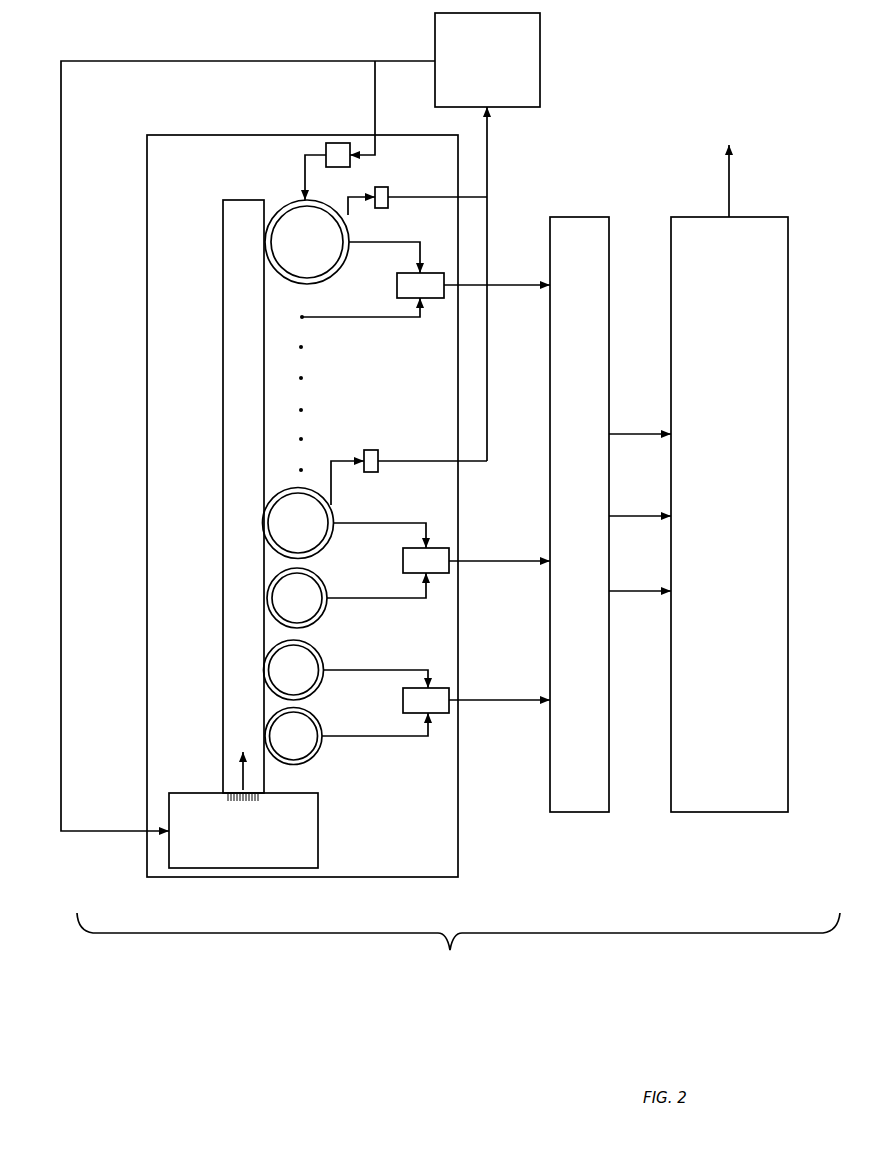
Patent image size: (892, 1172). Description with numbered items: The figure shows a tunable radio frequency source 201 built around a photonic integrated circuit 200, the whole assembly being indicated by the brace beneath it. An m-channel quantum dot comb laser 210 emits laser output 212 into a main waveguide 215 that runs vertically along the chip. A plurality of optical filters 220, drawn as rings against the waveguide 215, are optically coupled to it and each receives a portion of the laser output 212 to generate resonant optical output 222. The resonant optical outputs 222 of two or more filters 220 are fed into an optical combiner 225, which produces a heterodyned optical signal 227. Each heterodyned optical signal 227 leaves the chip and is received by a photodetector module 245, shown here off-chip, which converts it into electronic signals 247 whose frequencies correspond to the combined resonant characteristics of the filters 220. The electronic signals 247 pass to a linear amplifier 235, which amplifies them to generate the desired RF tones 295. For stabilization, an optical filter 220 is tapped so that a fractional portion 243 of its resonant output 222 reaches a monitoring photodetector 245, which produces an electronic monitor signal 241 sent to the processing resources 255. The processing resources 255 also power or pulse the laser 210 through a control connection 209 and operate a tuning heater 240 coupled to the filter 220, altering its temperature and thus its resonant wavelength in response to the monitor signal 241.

The photonic integrated circuit 200 is at (302, 506).
The tunable radio frequency source 201 is at (458, 947).
The control signal line from controller 209 is at (248, 464).
The quantum dot comb laser 210 is at (243, 830).
The laser output 212 is at (242, 761).
The main waveguide 215 is at (240, 543).
The optical filter 220 is at (287, 239).
The resonant optical output 222 is at (364, 491).
The optical combiner 225 is at (423, 493).
The heterodyned optical signal 227 is at (497, 482).
The linear amplifier 235 is at (729, 514).
The tuning heater 240 is at (343, 160).
The electronic monitor signal 241 is at (452, 284).
The fractional portion of the resonant optical output 243 is at (346, 344).
The photodetector module 245 is at (388, 192).
The electronic signal 247 is at (640, 526).
The processing resources 255 is at (487, 60).
The RF tone 295 is at (730, 168).